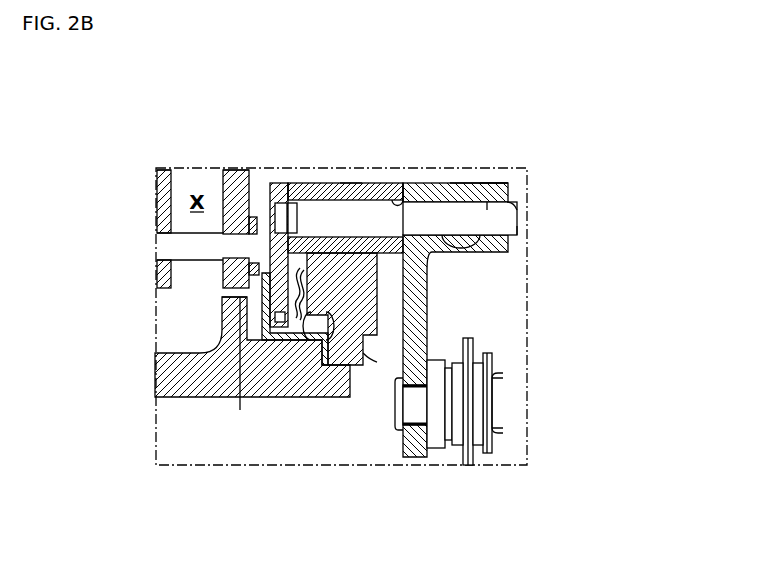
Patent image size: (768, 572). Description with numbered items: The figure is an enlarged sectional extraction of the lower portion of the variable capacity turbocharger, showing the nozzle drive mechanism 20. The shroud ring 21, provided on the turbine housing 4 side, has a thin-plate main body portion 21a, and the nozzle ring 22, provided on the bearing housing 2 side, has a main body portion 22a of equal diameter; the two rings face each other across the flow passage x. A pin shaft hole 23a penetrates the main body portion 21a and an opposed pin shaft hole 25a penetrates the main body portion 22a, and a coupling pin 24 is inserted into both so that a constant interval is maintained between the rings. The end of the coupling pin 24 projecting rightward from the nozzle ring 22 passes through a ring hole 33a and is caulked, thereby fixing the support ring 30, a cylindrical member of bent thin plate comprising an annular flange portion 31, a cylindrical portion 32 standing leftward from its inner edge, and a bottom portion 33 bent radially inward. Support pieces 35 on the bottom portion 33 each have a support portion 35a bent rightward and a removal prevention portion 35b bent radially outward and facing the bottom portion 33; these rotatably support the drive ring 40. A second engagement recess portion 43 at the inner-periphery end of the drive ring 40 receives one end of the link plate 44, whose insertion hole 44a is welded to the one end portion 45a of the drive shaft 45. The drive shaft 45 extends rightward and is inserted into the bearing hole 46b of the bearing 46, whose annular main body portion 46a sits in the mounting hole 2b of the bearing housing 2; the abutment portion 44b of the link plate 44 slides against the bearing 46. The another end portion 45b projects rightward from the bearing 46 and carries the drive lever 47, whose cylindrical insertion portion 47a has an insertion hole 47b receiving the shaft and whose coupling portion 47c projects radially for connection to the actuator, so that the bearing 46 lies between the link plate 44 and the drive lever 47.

The nozzle drive mechanism 20 is at (80, 90).
The shroud ring 21 is at (156, 186).
The main body portion 21a is at (158, 170).
The nozzle ring 22 is at (240, 168).
The main body portion 22a is at (232, 168).
The pin shaft hole 23a is at (156, 238).
The coupling pin 24 is at (156, 275).
The pin shaft hole 25a is at (249, 268).
The ring hole 33a is at (232, 291).
The bottom portion 33 is at (244, 330).
The drive ring 40 is at (286, 341).
The second engagement recess portion 43 is at (297, 320).
The flange portion 31 is at (345, 366).
The turbine housing 4 is at (364, 354).
The bearing housing 2 is at (373, 380).
The link plate 44 is at (274, 182).
The insertion hole 44a is at (306, 182).
The abutment portion 44b is at (352, 182).
The drive shaft 45 is at (392, 182).
The one end portion 45a is at (268, 184).
The another end portion 45b is at (487, 207).
The mounting hole 2b is at (404, 182).
The bearing 46 is at (413, 182).
The main body portion 46a is at (463, 182).
The bearing hole 46b is at (493, 182).
The drive lever 47 is at (470, 360).
The insertion portion 47a is at (520, 206).
The insertion hole 47b is at (518, 227).
The coupling portion 47c is at (468, 342).
The support portion 35a is at (508, 240).
The removal prevention portion 35b is at (428, 278).
The support piece 35 is at (428, 293).
The cylindrical portion 32 is at (378, 333).
The support ring 30 is at (365, 346).